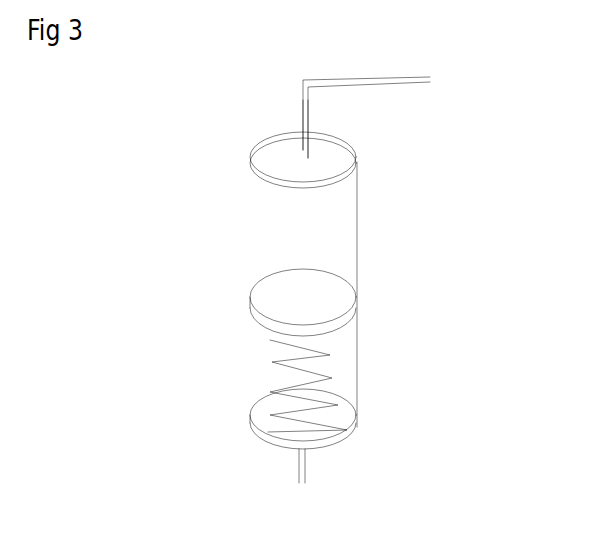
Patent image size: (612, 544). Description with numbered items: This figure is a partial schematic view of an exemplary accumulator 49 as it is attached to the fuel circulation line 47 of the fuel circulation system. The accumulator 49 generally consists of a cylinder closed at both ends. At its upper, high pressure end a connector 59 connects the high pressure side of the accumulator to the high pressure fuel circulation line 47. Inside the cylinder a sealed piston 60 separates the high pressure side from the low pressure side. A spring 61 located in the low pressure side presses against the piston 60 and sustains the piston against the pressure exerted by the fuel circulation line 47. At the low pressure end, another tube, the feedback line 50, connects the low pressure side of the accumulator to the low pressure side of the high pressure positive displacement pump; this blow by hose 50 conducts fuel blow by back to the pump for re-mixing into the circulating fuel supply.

The fuel circulation line 47 is at (405, 75).
The connector 59 is at (308, 102).
The sealed piston 60 is at (278, 273).
The spring 61 is at (335, 378).
The accumulator 49 is at (250, 403).
The feedback line 50 is at (308, 480).